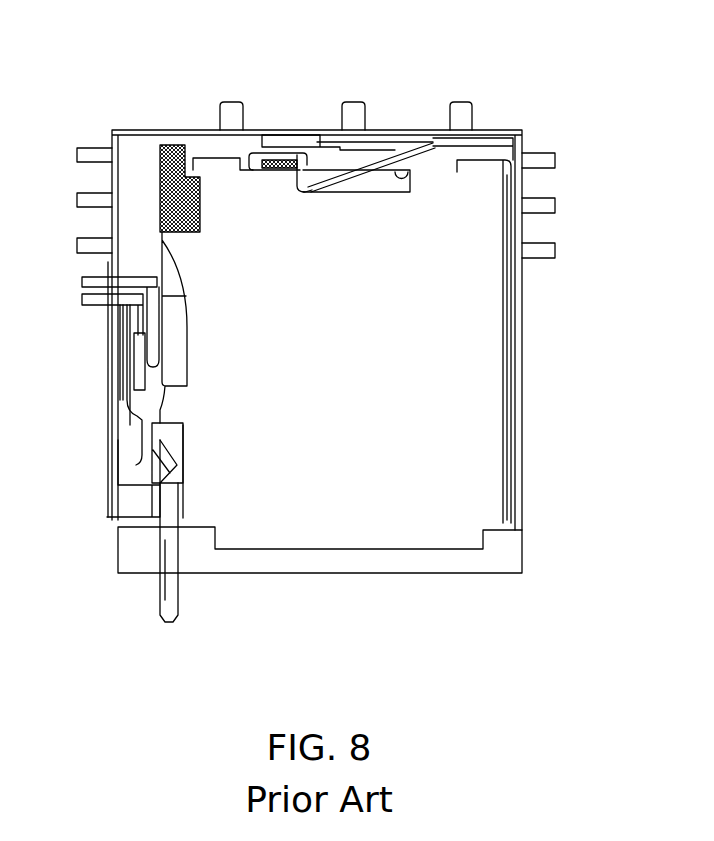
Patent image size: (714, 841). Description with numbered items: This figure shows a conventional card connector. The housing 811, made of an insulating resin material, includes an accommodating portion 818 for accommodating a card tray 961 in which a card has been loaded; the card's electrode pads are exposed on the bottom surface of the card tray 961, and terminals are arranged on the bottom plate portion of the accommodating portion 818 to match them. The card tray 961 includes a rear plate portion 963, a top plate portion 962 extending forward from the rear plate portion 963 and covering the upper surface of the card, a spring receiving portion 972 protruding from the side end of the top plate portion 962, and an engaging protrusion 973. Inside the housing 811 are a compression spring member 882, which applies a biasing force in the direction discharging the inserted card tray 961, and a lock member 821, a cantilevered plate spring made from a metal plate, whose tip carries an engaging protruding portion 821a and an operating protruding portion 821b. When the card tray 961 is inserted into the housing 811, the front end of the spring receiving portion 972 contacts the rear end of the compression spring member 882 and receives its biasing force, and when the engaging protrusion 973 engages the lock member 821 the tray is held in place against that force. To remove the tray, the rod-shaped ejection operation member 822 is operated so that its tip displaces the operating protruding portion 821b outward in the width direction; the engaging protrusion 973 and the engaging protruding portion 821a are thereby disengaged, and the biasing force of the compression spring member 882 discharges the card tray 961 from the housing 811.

The housing 811 is at (490, 130).
The accommodating portion 818 is at (412, 180).
The compression spring member 882 is at (168, 145).
The spring receiving portion 972 is at (168, 240).
The lock member 821 is at (152, 397).
The engaging protruding portion 821a is at (147, 438).
The operating protruding portion 821b is at (148, 488).
The ejection operation member 822 is at (160, 587).
The engaging protrusion 973 is at (137, 407).
The card tray 961 is at (487, 405).
The top plate portion 962 is at (467, 477).
The rear plate portion 963 is at (452, 565).